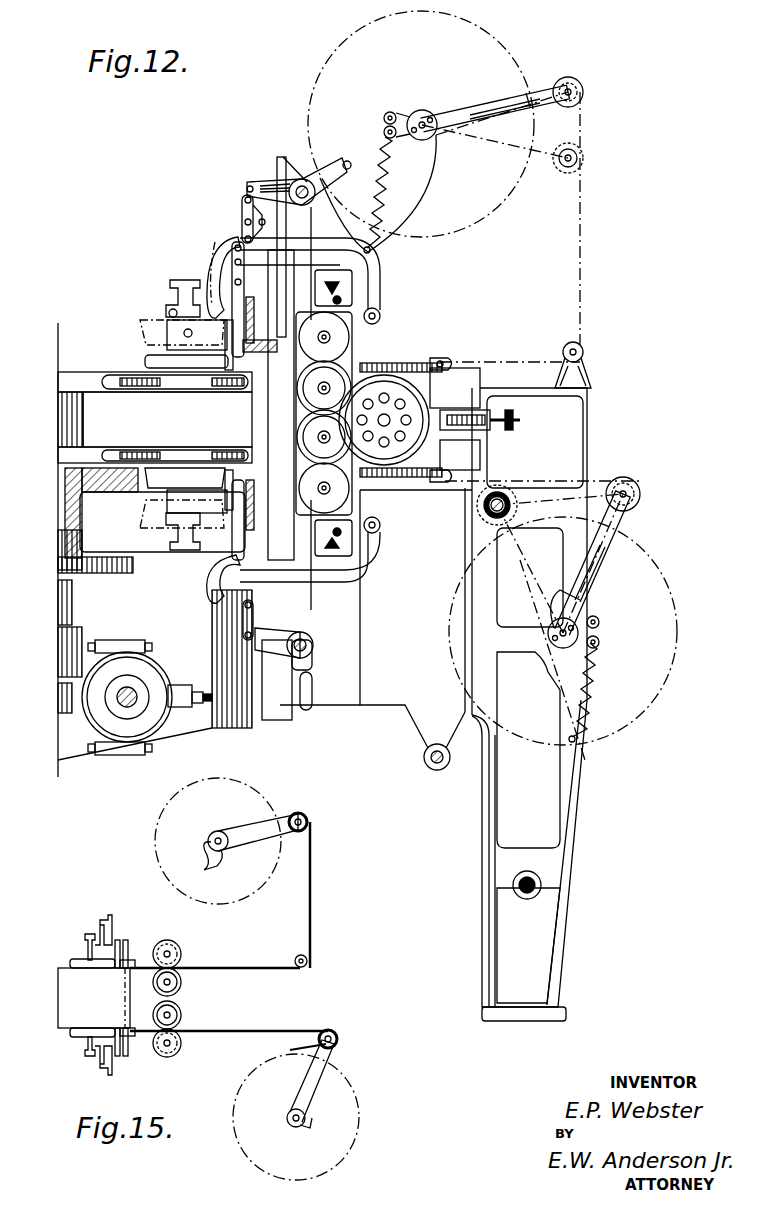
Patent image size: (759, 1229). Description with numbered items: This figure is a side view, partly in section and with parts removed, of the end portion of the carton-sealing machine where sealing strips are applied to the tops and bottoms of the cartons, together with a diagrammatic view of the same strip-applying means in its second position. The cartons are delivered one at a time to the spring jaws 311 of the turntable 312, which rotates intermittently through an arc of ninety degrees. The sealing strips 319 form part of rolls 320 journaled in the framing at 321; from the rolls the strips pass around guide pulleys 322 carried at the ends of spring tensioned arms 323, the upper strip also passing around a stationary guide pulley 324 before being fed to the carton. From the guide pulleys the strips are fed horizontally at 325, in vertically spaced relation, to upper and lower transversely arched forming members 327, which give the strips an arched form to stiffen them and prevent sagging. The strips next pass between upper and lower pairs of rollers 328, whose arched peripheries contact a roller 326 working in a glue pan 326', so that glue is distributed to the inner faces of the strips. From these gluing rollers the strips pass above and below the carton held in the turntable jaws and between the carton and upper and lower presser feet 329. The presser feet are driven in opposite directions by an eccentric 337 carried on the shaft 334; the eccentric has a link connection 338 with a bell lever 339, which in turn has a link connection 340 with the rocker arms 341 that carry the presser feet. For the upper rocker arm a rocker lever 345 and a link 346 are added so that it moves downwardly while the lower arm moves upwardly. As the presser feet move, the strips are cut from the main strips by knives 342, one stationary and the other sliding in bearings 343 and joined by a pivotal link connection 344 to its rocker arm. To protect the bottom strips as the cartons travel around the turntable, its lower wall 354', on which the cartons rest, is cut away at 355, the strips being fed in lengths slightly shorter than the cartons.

In FIG. 12, the spring jaws 311 is at (198, 390).
In FIG. 12, the turntable 312 is at (126, 375).
In FIG. 12, the sealing strips 319 is at (580, 248).
In FIG. 15, the sealing strips 319 is at (311, 850).
In FIG. 12, the rolls 320 is at (492, 378).
In FIG. 15, the rolls 320 is at (257, 979).
In FIG. 12, the journals in the framing 321 is at (420, 114).
In FIG. 12, the guide pulleys 322 is at (556, 82).
In FIG. 15, the guide pulleys 322 is at (303, 814).
In FIG. 12, the spring tensioned arms 323 is at (460, 110).
In FIG. 15, the spring tensioned arms 323 is at (247, 840).
In FIG. 12, the stationary guide pulley 324 is at (583, 352).
In FIG. 12, the horizontal feed path 325 is at (508, 362).
In FIG. 15, the horizontal feed path 325 is at (252, 967).
In FIG. 12, the roller 326 is at (409, 398).
In FIG. 12, the glue pan 326' is at (493, 467).
In FIG. 12, the transversely arched forming members 327 is at (388, 362).
In FIG. 12, the rollers 328 is at (308, 395).
In FIG. 15, the rollers 328 is at (180, 988).
In FIG. 12, the presser feet 329 is at (150, 355).
In FIG. 15, the presser feet 329 is at (70, 960).
In FIG. 12, the shaft 334 is at (132, 702).
In FIG. 12, the eccentric 337 is at (112, 730).
In FIG. 12, the link connection 338 is at (212, 722).
In FIG. 12, the bell lever 339 is at (312, 636).
In FIG. 12, the link connection 340 is at (243, 202).
In FIG. 12, the rocker arms 341 is at (236, 244).
In FIG. 15, the rocker arms 341 is at (100, 916).
In FIG. 12, the knives 342 is at (232, 372).
In FIG. 15, the knives 342 is at (126, 962).
In FIG. 12, the bearings 343 is at (242, 320).
In FIG. 12, the pivotal link connection 344 is at (232, 262).
In FIG. 12, the rocker lever 345 is at (276, 190).
In FIG. 12, the link 346 is at (360, 146).
In FIG. 12, the lower wall 354' is at (110, 486).
In FIG. 12, the cut-away portion 355 is at (162, 500).